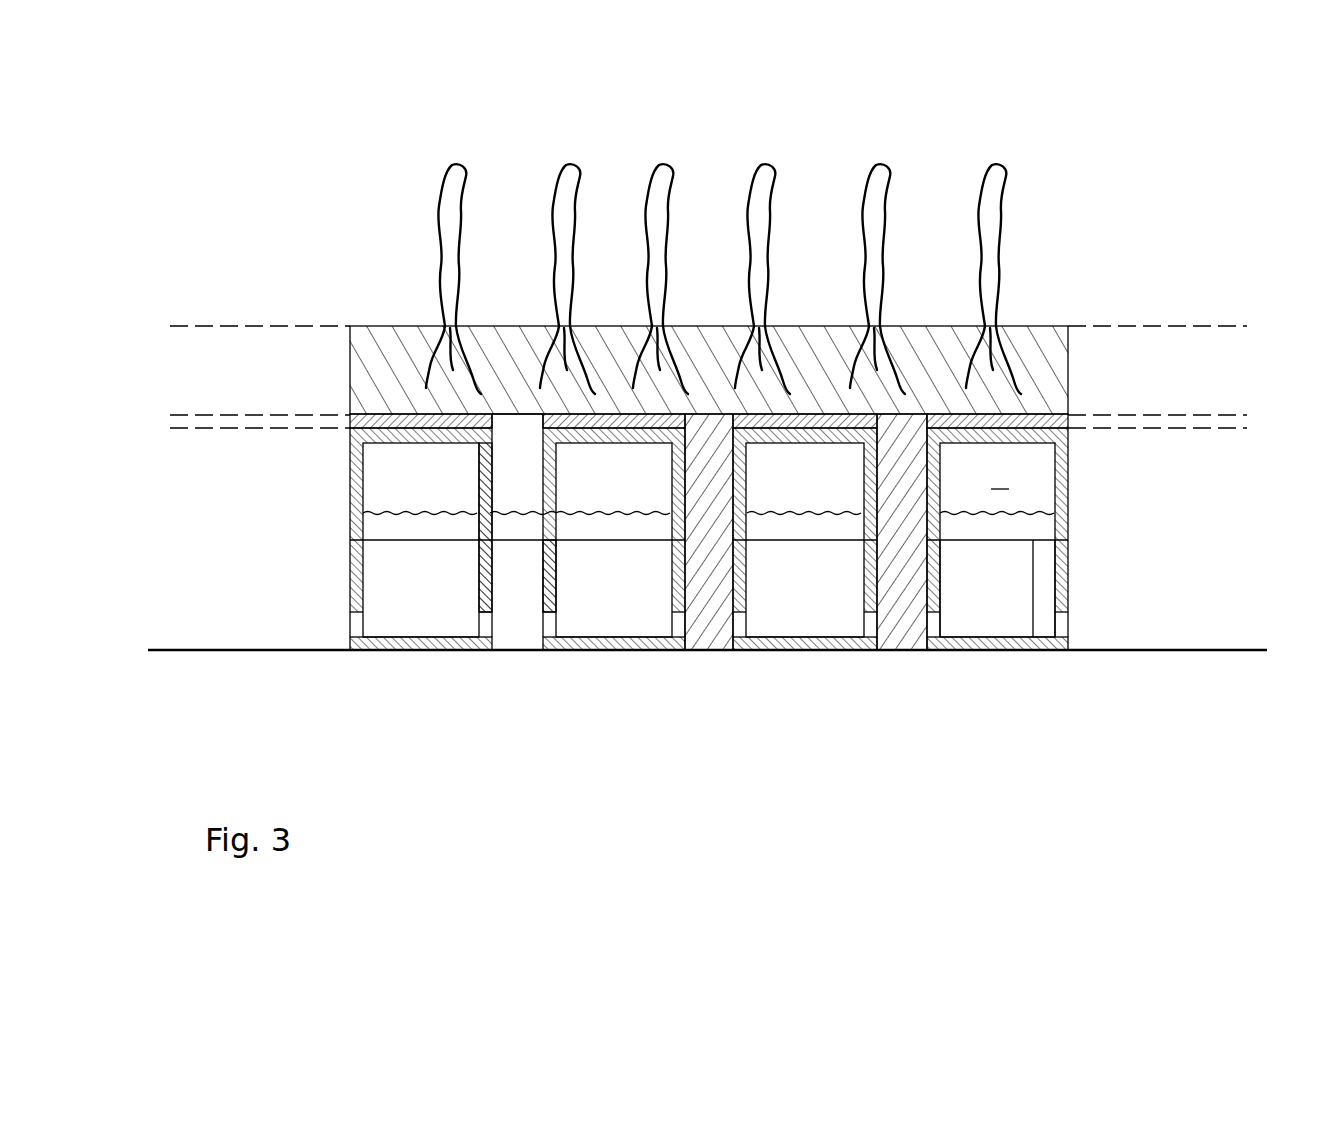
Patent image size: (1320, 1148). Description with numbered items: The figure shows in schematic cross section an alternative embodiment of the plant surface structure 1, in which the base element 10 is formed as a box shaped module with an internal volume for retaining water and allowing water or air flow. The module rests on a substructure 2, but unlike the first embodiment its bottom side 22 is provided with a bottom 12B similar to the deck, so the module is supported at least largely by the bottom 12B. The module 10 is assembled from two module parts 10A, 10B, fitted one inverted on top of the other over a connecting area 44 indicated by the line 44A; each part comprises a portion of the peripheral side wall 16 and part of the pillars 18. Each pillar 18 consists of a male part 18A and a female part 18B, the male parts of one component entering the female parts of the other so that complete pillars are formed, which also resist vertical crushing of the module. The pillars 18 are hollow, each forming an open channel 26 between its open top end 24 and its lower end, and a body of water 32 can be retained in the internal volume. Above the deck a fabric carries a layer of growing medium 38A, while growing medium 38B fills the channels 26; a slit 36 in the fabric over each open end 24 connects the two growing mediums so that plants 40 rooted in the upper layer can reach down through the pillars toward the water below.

The plant surface structure 1 is at (1156, 306).
The substructure 2 is at (327, 702).
The base element 10 is at (1083, 493).
The upper module part 10A is at (334, 519).
The lower module part 10B is at (334, 588).
The bottom 12B is at (805, 643).
The peripheral side wall 16 is at (1068, 458).
The pillar 18 is at (460, 588).
The male pillar part 18A is at (558, 489).
The female pillar part 18B is at (558, 588).
The bottom side 22 is at (671, 680).
The open top end 24 is at (505, 417).
The channel 26 is at (517, 612).
The body of water 32 is at (975, 596).
The slit 36 is at (524, 421).
The layer of growing medium 38A is at (1055, 371).
The growing medium in channel 38B is at (902, 630).
The plant 40 is at (1008, 186).
The connecting area 44 is at (1083, 540).
The connection line 44A is at (1033, 637).